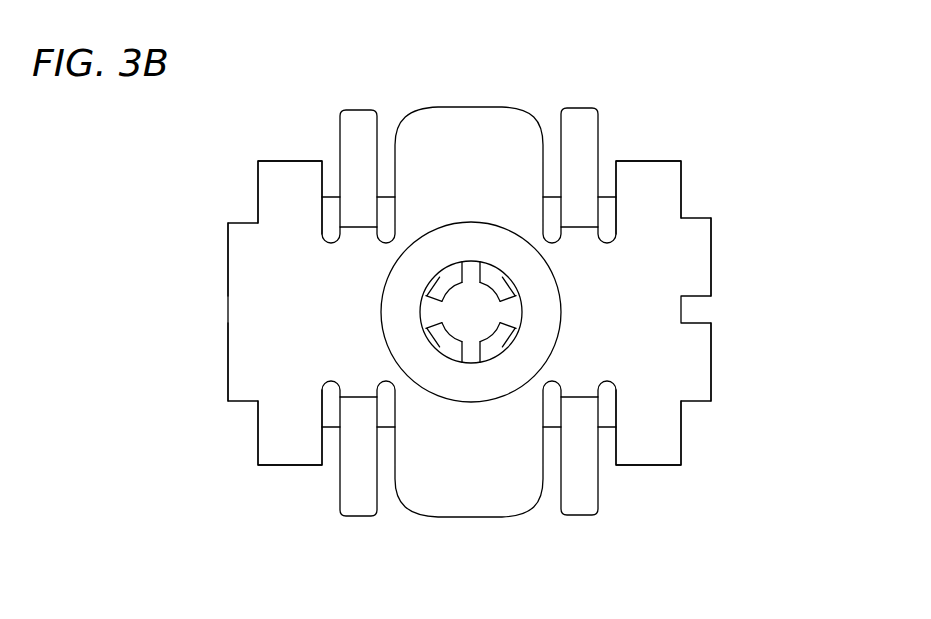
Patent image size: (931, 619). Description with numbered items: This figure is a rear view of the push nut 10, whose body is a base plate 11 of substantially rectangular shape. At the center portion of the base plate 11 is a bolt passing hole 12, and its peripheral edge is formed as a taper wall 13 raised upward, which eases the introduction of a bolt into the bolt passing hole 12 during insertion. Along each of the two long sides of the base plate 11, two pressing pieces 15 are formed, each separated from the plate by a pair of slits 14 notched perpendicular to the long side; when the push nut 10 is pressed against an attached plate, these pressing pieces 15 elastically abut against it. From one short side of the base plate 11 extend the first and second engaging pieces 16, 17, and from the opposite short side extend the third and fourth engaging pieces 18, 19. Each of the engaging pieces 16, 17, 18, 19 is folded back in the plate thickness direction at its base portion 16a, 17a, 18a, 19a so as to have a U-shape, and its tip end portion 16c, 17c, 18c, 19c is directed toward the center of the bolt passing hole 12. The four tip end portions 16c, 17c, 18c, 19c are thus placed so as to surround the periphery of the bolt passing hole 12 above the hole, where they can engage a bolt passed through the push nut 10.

The push nut 10 is at (730, 98).
The base plate 11 is at (485, 494).
The bolt passing hole 12 is at (446, 311).
The taper wall 13 is at (546, 298).
The slit 14 is at (549, 172).
The pressing piece 15 is at (355, 142).
The first engaging piece 16 is at (605, 192).
The second engaging piece 17 is at (607, 430).
The third engaging piece 18 is at (333, 431).
The fourth engaging piece 19 is at (332, 192).
The base portion of first engaging piece 16a is at (712, 247).
The base portion of second engaging piece 17a is at (712, 352).
The base portion of third engaging piece 18a is at (228, 377).
The base portion of fourth engaging piece 19a is at (228, 270).
The tip end portion of first engaging piece 16c is at (498, 279).
The tip end portion of second engaging piece 17c is at (499, 342).
The tip end portion of third engaging piece 18c is at (441, 344).
The tip end portion of fourth engaging piece 19c is at (441, 278).